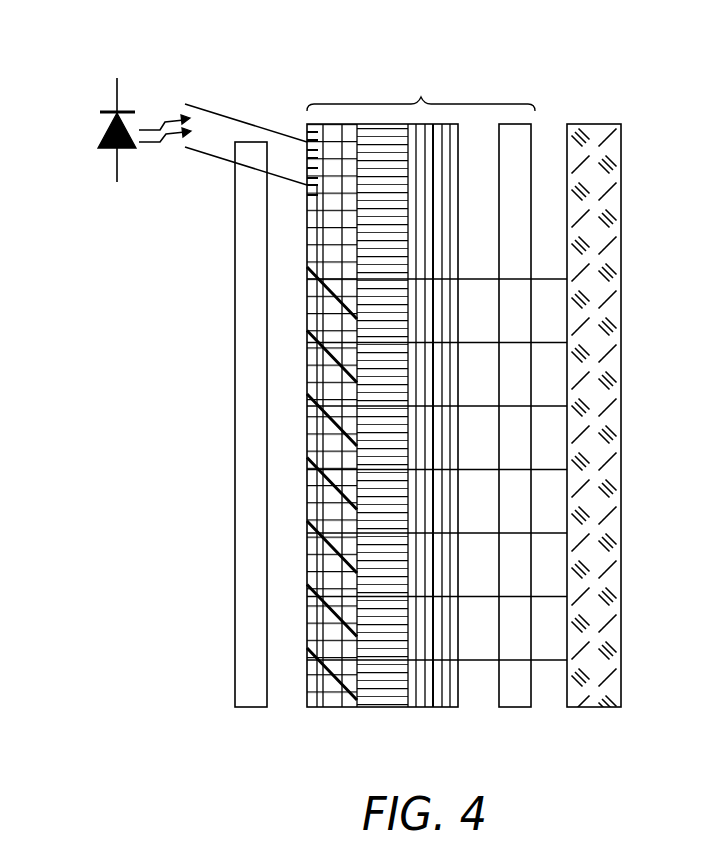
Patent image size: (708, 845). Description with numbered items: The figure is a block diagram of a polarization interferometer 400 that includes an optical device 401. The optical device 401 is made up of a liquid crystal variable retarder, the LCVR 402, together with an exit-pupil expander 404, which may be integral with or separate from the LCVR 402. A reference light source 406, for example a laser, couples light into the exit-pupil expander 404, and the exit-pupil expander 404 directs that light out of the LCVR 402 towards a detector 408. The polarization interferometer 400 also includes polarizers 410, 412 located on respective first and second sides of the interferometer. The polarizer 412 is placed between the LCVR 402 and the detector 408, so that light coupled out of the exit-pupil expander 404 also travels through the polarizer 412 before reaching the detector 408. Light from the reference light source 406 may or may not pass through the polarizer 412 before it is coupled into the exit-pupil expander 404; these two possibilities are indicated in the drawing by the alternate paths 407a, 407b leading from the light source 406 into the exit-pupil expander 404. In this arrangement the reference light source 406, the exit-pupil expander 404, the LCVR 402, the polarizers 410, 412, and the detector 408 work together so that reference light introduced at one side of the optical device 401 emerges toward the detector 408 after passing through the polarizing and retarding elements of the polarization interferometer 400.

The polarization interferometer 400 is at (421, 92).
The optical device 401 is at (375, 85).
The LCVR 402 is at (410, 708).
The exit-pupil expander 404 is at (330, 708).
The reference light source 406 is at (107, 123).
The alternate path 407a is at (224, 112).
The alternate path 407b is at (213, 155).
The detector 408 is at (588, 708).
The polarizer 410 is at (253, 708).
The polarizer 412 is at (512, 708).